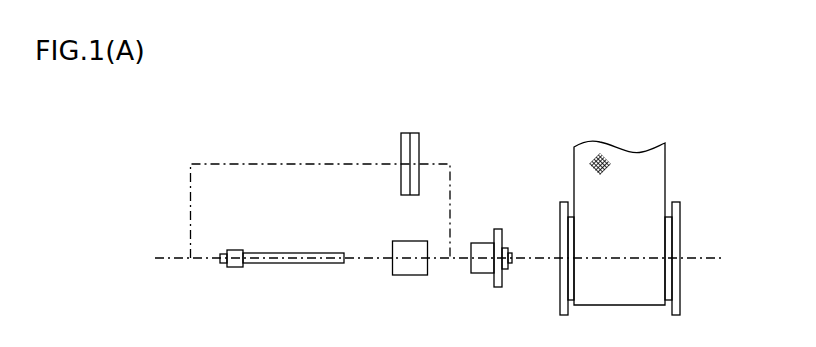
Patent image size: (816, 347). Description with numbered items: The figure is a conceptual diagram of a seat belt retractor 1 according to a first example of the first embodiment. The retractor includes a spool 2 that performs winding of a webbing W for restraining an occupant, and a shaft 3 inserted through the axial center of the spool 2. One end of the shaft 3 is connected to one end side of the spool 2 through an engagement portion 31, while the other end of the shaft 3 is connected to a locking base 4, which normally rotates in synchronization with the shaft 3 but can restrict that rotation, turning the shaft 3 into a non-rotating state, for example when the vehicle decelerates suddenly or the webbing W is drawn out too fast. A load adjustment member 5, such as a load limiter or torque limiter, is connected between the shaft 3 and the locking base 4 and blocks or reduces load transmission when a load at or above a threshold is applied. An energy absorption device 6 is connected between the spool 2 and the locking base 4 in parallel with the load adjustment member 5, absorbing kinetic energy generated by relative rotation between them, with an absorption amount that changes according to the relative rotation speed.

The seat belt retractor 1 is at (248, 112).
The spool 2 is at (681, 221).
The shaft 3 is at (284, 264).
The engagement portion 31 is at (236, 268).
The locking base 4 is at (498, 289).
The load adjustment member 5 is at (410, 276).
The energy absorption device 6 is at (410, 132).
The webbing W is at (666, 160).